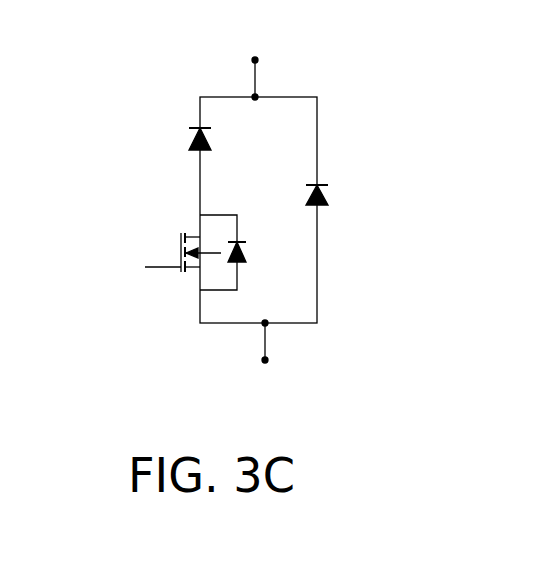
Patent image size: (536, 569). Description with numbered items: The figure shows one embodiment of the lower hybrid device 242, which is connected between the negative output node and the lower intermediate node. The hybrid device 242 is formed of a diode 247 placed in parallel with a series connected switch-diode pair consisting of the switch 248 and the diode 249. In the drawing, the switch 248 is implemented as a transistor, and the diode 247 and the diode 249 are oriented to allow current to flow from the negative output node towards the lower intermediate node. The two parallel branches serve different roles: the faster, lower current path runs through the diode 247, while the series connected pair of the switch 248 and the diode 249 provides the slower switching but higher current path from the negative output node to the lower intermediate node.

The hybrid device H2 242 is at (239, 205).
The diode D2 247 is at (330, 190).
The switch Q4 248 is at (181, 241).
The diode D4 249 is at (193, 152).